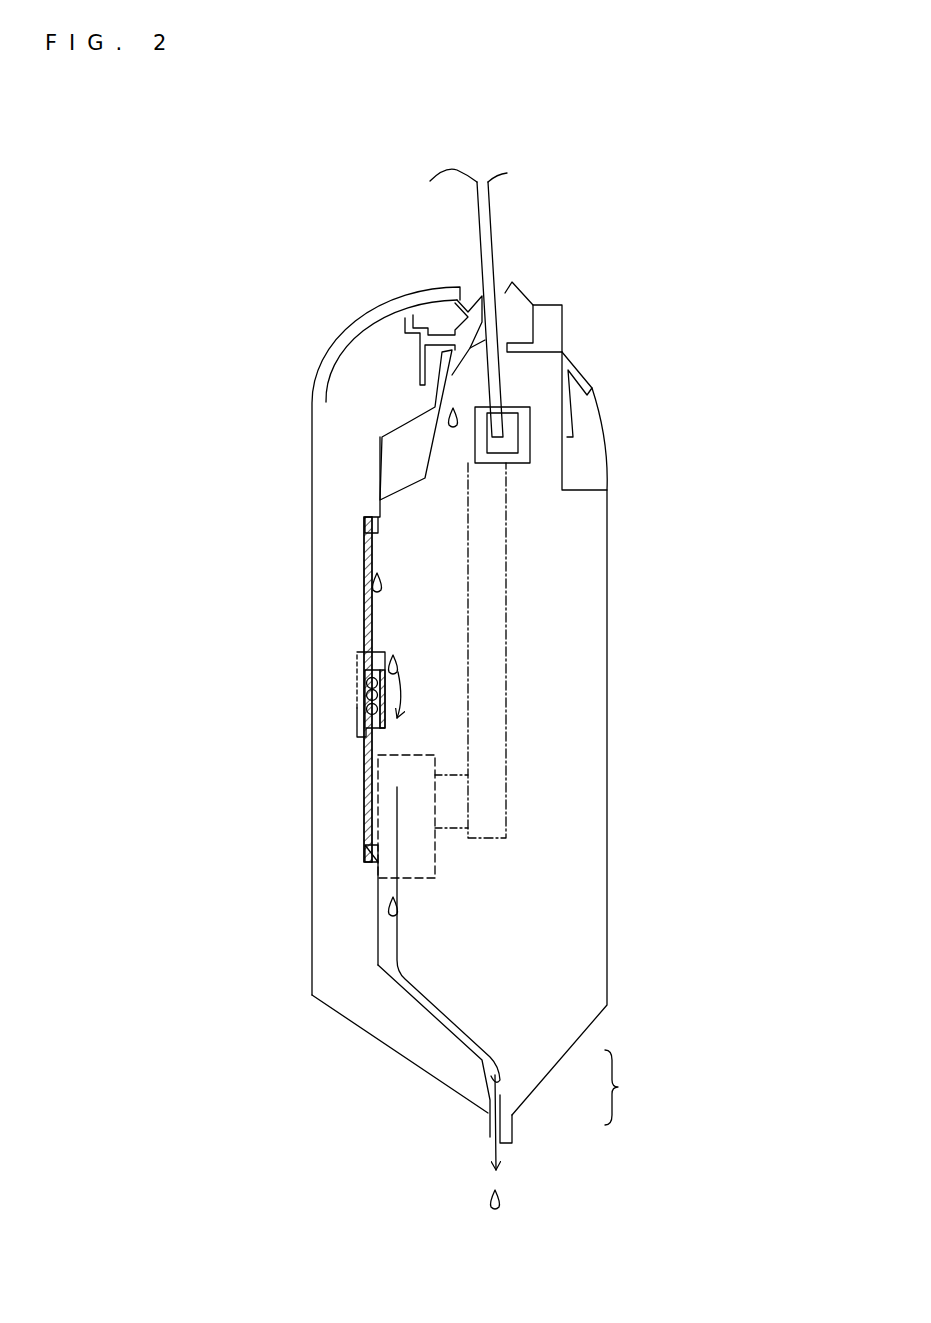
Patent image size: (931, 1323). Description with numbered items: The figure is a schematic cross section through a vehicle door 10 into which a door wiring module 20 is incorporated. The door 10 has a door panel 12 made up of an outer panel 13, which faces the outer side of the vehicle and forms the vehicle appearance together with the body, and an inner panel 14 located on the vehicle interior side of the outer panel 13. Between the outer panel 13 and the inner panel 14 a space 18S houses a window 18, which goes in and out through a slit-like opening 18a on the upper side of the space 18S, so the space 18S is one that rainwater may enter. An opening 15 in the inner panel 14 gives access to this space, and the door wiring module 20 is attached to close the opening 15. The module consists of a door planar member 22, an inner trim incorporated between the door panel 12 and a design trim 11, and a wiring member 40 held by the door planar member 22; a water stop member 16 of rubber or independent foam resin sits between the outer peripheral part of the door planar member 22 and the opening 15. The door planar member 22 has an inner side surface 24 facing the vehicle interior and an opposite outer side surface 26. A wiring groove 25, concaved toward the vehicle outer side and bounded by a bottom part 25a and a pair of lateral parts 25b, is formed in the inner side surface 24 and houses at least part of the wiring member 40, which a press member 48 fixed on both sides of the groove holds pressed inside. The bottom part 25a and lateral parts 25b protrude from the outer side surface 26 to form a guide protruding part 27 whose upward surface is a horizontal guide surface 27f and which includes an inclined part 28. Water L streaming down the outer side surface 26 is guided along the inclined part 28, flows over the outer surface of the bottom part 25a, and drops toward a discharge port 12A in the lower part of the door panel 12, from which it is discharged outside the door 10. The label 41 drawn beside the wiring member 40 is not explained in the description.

The door 10 is at (548, 181).
The design trim 11 is at (312, 470).
The door panel 12 is at (568, 1102).
The discharge port 12A is at (485, 1062).
The outer panel 13 is at (573, 1035).
The inner panel 14 is at (500, 1097).
The opening 15 is at (380, 845).
The water stop member 16 is at (376, 516).
The window 18 is at (491, 210).
The slit-like opening 18a is at (512, 300).
The space 18S is at (448, 567).
The door wiring module 20 is at (312, 689).
The door planar member 22 is at (363, 584).
The inner side surface 24 is at (363, 618).
The wiring groove 25 is at (363, 680).
The bottom part 25a is at (363, 708).
The lateral parts 25b is at (357, 653).
The outer side surface 26 is at (373, 803).
The guide protruding part 27 is at (397, 690).
The horizontal guide surface 27f is at (385, 665).
The inclined part 28 is at (387, 722).
The wiring member 40 is at (271, 717).
The sensor 41 is at (363, 698).
The press member 48 is at (350, 727).
The water L is at (383, 587).